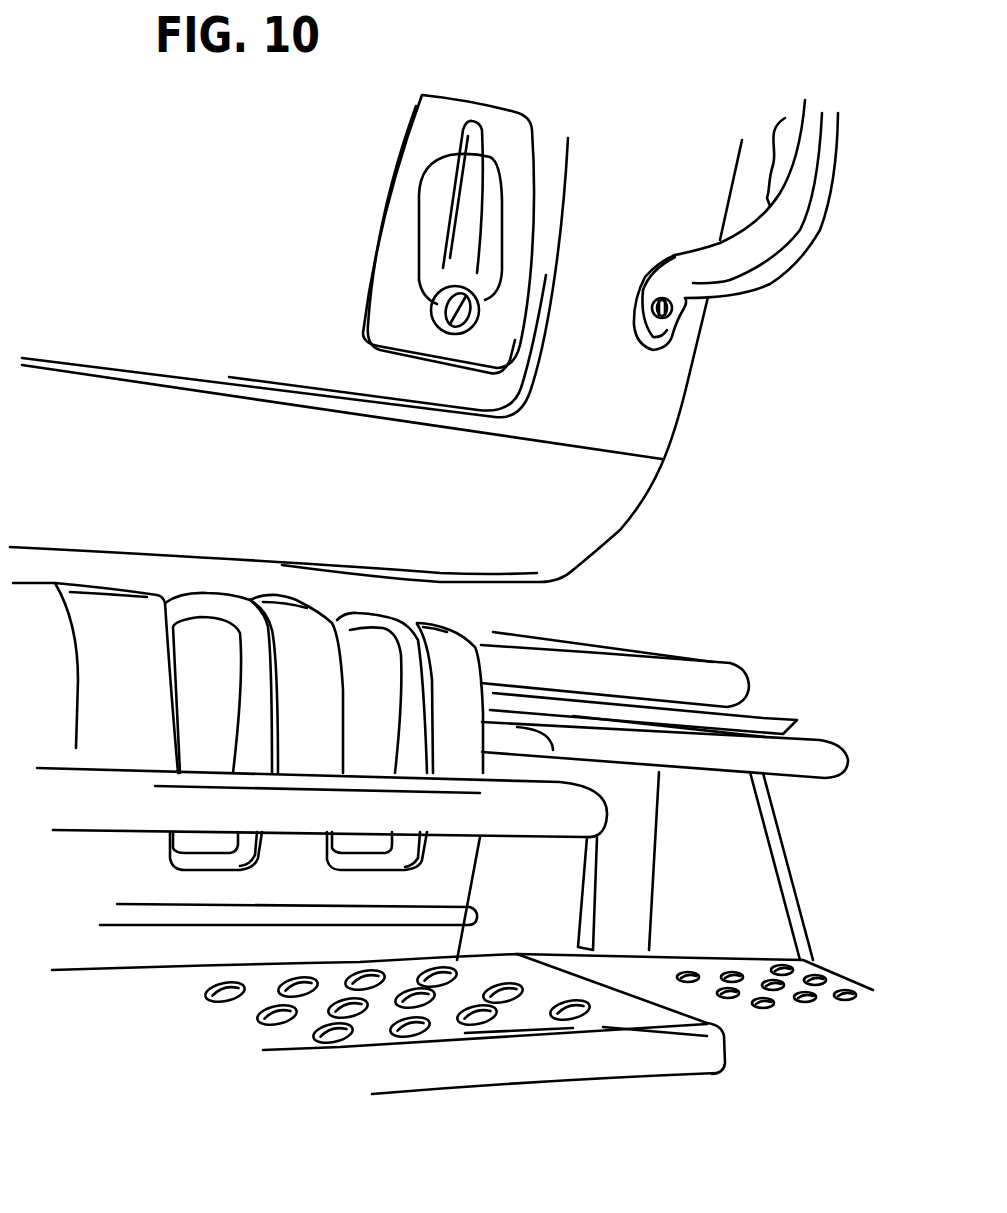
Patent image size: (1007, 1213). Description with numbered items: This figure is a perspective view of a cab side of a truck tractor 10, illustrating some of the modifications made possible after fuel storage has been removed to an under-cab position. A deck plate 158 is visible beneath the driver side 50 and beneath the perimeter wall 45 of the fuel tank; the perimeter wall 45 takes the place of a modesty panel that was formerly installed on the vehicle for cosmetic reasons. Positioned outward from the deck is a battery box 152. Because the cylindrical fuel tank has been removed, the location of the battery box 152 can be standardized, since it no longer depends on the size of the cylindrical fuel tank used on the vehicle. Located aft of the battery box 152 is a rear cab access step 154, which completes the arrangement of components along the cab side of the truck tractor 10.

The truck tractor 10 is at (750, 338).
The driver side 50 is at (645, 405).
The perimeter wall 45 is at (573, 523).
The battery box 152 is at (472, 633).
The deck plate 158 is at (727, 659).
The rear cab access step 154 is at (774, 713).